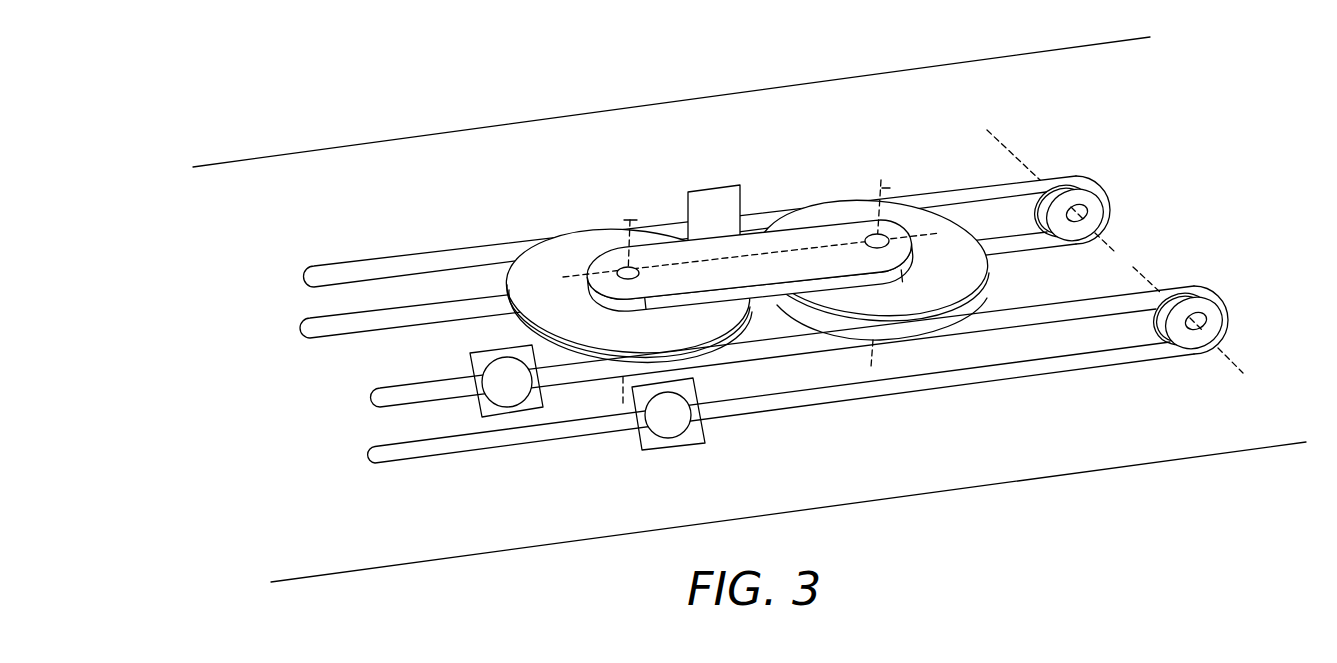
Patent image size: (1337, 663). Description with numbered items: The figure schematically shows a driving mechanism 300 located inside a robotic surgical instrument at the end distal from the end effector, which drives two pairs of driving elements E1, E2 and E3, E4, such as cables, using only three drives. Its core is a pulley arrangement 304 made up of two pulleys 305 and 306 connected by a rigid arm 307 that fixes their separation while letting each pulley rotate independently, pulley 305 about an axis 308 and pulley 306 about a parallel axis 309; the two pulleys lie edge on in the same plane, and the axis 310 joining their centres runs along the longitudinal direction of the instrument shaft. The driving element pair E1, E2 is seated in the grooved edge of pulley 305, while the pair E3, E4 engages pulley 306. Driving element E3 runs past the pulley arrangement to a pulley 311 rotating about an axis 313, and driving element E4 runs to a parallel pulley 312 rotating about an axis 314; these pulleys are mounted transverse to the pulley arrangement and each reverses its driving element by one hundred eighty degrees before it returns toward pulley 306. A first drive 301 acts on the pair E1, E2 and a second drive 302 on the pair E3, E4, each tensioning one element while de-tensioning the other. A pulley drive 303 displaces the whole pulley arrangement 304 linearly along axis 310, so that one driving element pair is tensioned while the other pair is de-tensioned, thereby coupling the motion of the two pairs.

The driving mechanism 300 is at (486, 93).
The first drive 301 is at (492, 414).
The second drive 302 is at (648, 448).
The pulley drive 303 is at (714, 192).
The pulley arrangement 304 is at (653, 193).
The pulley 305 is at (538, 258).
The pulley 306 is at (980, 272).
The arm 307 is at (790, 267).
The axis 308 is at (627, 220).
The axis 309 is at (889, 186).
The axis 310 is at (810, 249).
The pulley 311 is at (1105, 202).
The pulley 312 is at (1218, 313).
The axis 313 is at (1099, 236).
The axis 314 is at (1219, 350).
The driving element E1 is at (326, 272).
The driving element E2 is at (392, 395).
The driving element E3 is at (312, 328).
The driving element E4 is at (378, 455).